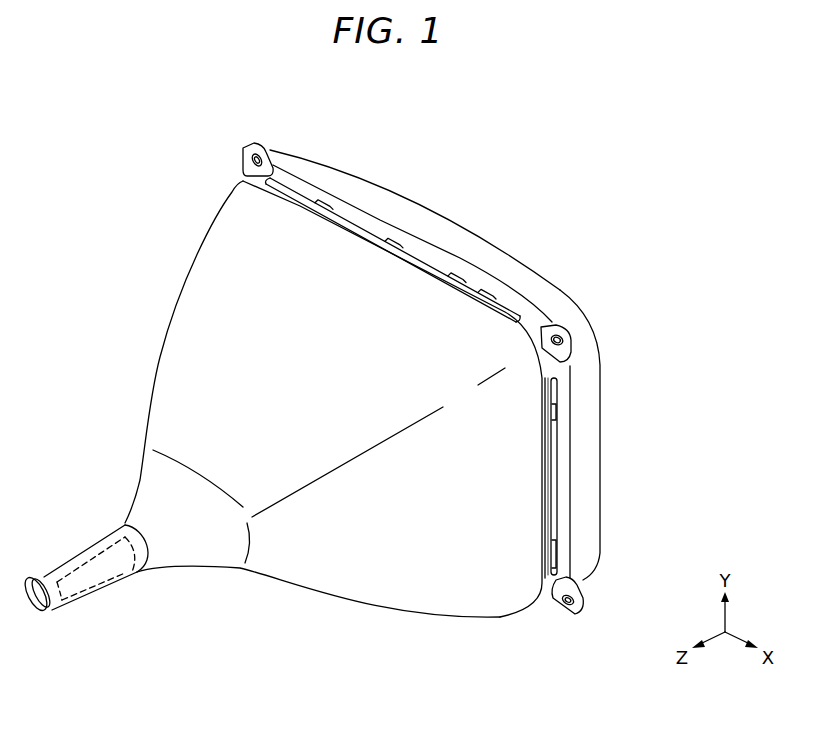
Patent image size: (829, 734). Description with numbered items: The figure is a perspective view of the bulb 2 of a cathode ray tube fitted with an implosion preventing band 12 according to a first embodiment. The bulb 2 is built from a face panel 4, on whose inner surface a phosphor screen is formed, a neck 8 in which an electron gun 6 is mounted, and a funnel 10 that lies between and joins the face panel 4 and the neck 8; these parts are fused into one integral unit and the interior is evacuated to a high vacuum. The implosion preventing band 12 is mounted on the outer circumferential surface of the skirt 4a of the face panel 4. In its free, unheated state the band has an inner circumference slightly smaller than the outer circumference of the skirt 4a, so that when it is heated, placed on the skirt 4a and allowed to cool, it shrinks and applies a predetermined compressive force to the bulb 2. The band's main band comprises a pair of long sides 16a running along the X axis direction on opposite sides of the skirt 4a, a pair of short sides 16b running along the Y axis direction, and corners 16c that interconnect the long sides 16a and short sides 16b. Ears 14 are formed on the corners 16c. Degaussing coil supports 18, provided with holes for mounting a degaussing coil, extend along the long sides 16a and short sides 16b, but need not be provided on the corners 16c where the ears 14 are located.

The bulb 2 is at (150, 417).
The face panel 4 is at (600, 388).
The skirt 4a is at (303, 160).
The electron gun 6 is at (93, 585).
The neck 8 is at (68, 557).
The funnel 10 is at (377, 578).
The implosion preventing band 12 is at (577, 433).
The ears 14 is at (578, 613).
The long sides 16a is at (423, 250).
The short sides 16b is at (567, 475).
The corners 16c is at (533, 320).
The degaussing coil supports 18 is at (348, 222).